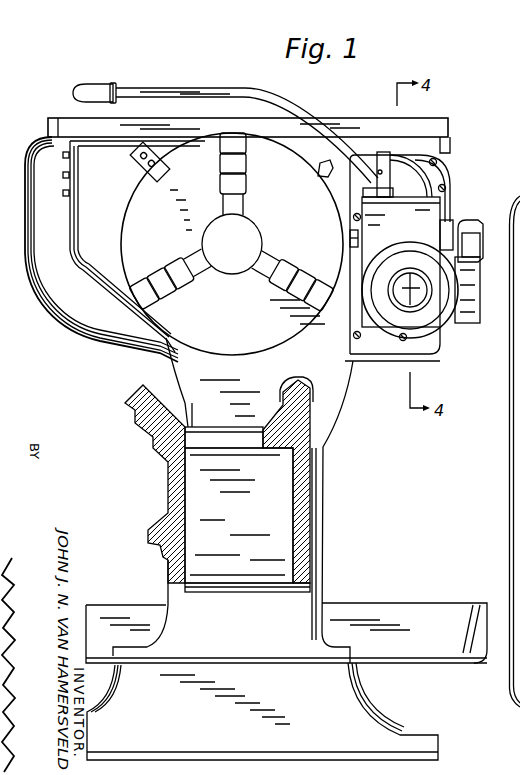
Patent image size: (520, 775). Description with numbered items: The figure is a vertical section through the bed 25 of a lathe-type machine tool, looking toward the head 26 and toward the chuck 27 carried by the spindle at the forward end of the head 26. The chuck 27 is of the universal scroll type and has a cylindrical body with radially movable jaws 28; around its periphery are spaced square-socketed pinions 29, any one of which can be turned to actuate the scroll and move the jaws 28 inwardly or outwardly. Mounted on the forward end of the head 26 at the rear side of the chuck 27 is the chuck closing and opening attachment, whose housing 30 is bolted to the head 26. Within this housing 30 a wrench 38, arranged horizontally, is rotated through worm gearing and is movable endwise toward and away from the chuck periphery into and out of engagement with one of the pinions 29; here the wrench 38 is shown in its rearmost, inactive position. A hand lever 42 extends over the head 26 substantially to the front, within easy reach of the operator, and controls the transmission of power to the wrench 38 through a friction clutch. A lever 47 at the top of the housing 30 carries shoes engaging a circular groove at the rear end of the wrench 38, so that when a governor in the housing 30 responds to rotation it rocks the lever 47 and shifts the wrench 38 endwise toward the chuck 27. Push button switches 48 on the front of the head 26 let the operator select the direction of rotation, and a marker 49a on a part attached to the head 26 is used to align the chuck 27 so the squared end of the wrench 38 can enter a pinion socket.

The bed 25 is at (176, 487).
The head 26 is at (75, 323).
The chuck 27 is at (138, 214).
The jaws 28 is at (283, 267).
The pinions 29 is at (330, 166).
The housing 30 is at (432, 213).
The wrench 38 is at (350, 235).
The hand lever 42 is at (213, 90).
The lever 47 is at (473, 223).
The push button switches 48 is at (63, 173).
The marker 49a is at (143, 167).